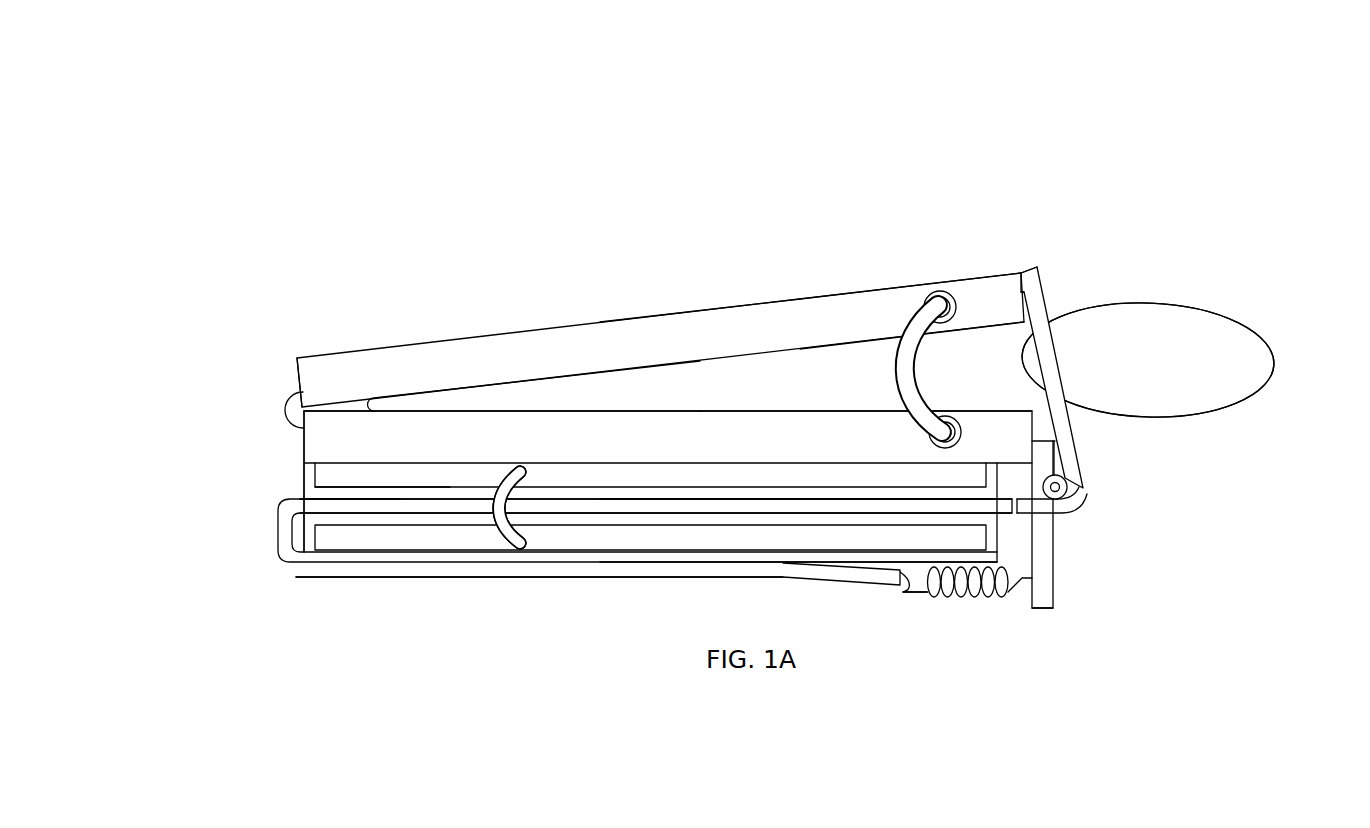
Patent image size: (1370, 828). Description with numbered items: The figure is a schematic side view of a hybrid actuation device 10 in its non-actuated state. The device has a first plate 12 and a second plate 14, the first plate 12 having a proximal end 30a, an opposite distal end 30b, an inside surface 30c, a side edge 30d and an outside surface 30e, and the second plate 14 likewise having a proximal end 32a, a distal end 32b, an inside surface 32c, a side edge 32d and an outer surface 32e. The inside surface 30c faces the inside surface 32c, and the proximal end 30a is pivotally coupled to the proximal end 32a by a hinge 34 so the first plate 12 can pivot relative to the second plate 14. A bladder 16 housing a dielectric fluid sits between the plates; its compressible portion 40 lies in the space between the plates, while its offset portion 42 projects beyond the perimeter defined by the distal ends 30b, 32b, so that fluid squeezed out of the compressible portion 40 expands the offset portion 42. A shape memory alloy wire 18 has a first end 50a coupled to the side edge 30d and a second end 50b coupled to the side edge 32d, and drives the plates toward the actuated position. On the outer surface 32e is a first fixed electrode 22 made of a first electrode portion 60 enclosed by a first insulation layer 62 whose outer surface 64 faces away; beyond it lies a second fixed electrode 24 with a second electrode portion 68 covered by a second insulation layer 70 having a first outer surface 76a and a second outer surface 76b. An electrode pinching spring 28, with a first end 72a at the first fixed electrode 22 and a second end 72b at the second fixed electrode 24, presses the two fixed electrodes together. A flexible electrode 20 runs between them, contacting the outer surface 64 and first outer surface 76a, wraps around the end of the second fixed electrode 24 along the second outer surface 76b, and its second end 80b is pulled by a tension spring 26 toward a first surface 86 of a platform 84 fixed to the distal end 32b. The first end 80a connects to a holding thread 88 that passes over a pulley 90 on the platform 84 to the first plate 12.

The hybrid actuation device 10 is at (234, 160).
The first plate 12 is at (355, 340).
The second plate 14 is at (290, 456).
The bladder 16 is at (1215, 296).
The shape memory alloy (SMA) wire 18 is at (901, 303).
The flexible electrode 20 is at (852, 530).
The first fixed electrode 22 is at (300, 484).
The second fixed electrode 24 is at (303, 558).
The tension spring 26 is at (958, 598).
The electrode pinching spring 28 is at (488, 471).
The proximal end of first plate 30a is at (297, 362).
The distal end of first plate 30b is at (1038, 290).
The inside surface of first plate 30c is at (872, 342).
The side edge of first plate 30d is at (706, 309).
The outside surface of first plate 30e is at (797, 298).
The proximal end of second plate 32a is at (300, 444).
The distal end of second plate 32b is at (1055, 441).
The inside surface of second plate 32c is at (781, 411).
The side edge of second plate 32d is at (705, 411).
The outer surface of second plate 32e is at (428, 464).
The hinge 34 is at (288, 406).
The compressible portion 40 is at (575, 376).
The offset portion 42 is at (1262, 336).
The first end of SMA wire 50a is at (944, 292).
The second end of SMA wire 50b is at (958, 437).
The first electrode portion 60 is at (628, 480).
The first insulation layer 62 is at (745, 498).
The outer surface of first insulation layer 64 is at (638, 504).
The second electrode portion 68 is at (782, 540).
The second insulation layer 70 is at (710, 566).
The first end of electrode pinching spring 72a is at (522, 472).
The second end of electrode pinching spring 72b is at (521, 545).
The first outer surface of second insulation layer 76a is at (340, 497).
The second outer surface of second insulation layer 76b is at (630, 566).
The first end of flexible electrode 80a is at (1020, 512).
The second end of flexible electrode 80b is at (905, 586).
The platform 84 is at (1055, 580).
The first surface of platform 86 is at (1035, 608).
The holding thread 88 is at (1056, 352).
The pulley 90 is at (1066, 489).